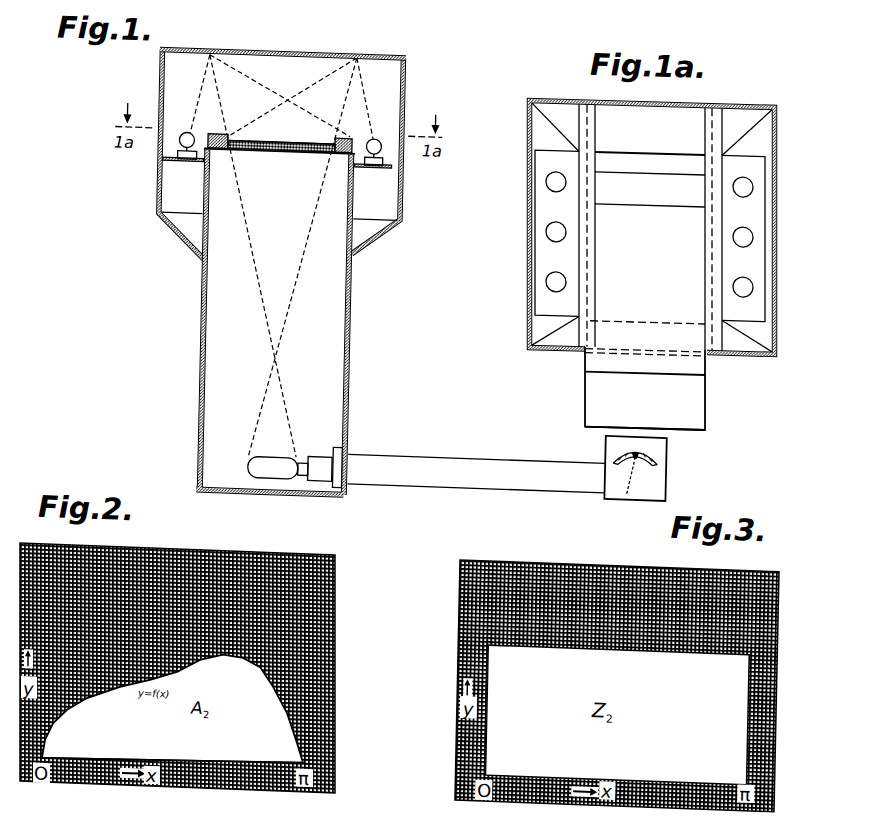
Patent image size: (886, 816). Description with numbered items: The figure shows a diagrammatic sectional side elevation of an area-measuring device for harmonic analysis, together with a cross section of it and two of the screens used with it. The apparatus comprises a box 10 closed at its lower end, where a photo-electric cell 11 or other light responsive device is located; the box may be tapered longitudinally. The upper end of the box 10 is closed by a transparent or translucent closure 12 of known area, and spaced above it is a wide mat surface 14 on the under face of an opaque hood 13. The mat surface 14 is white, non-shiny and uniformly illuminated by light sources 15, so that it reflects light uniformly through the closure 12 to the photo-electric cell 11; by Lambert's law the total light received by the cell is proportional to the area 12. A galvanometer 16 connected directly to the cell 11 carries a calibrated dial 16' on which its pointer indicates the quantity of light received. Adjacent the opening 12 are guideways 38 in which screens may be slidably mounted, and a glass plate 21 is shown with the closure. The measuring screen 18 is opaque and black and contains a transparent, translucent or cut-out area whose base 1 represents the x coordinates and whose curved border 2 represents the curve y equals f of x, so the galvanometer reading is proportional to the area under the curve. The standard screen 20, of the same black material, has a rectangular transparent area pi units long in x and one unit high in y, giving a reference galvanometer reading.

In FIG. 1, the box 10 is at (364, 295).
In FIG. 1, the photo-electric cell 11 is at (281, 475).
In FIG. 1, the transparent or translucent closure 12 is at (278, 147).
In FIG. 1A, the transparent or translucent closure 12 is at (632, 319).
In FIG. 1, the opaque hood 13 is at (406, 202).
In FIG. 1A, the opaque hood 13 is at (527, 237).
In FIG. 1, the mat surface 14 is at (290, 46).
In FIG. 1, the light source 15 is at (184, 143).
In FIG. 1A, the light source 15 is at (549, 240).
In FIG. 1, the galvanometer 16 is at (652, 469).
In FIG. 1, the calibrated dial 16' is at (657, 450).
In FIG. 1, the measuring screen 18 is at (259, 137).
In FIG. 1A, the measuring screen 18 is at (660, 361).
In FIG. 2, the measuring screen 18 is at (328, 591).
In FIG. 3, the standard screen 20 is at (461, 604).
In FIG. 1, the sine multiplier screen 21 is at (297, 147).
In FIG. 1A, the sine multiplier screen 21 is at (703, 400).
In FIG. 1, the guideways 38 is at (354, 133).
In FIG. 1A, the guideways 38 is at (580, 334).
In FIG. 2, the base 1 is at (178, 754).
In FIG. 2, the curved border 2 is at (127, 684).